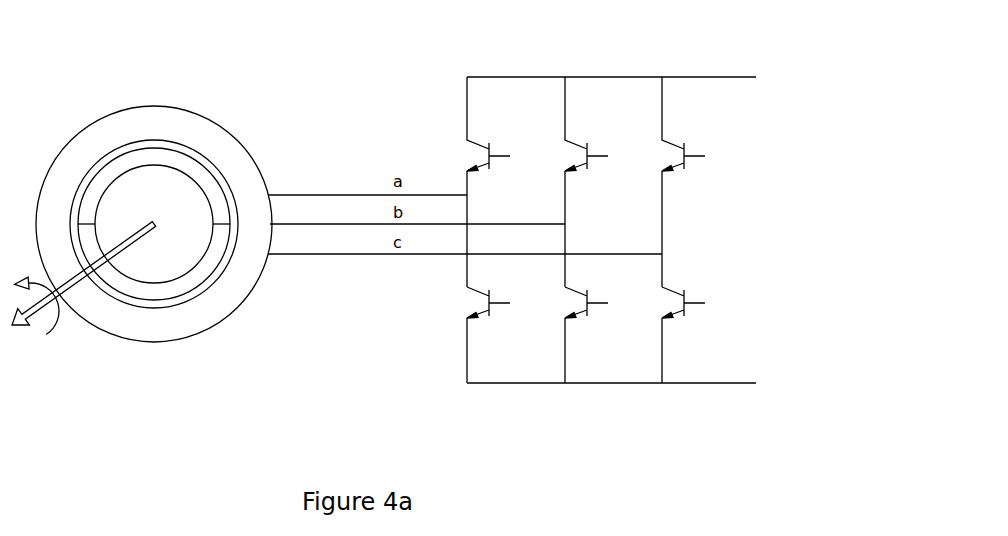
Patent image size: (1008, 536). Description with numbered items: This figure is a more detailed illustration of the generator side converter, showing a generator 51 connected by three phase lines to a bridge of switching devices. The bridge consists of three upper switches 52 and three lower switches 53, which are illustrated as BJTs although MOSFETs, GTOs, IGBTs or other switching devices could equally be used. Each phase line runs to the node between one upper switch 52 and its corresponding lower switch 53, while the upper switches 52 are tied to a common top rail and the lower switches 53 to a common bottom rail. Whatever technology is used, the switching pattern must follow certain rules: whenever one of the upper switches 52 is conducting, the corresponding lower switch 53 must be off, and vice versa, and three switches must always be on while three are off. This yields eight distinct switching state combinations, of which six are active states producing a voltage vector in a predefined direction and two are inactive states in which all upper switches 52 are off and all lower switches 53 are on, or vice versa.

The electric motor 51 is at (122, 127).
The upper switches 52 is at (653, 132).
The lower switches 53 is at (648, 328).